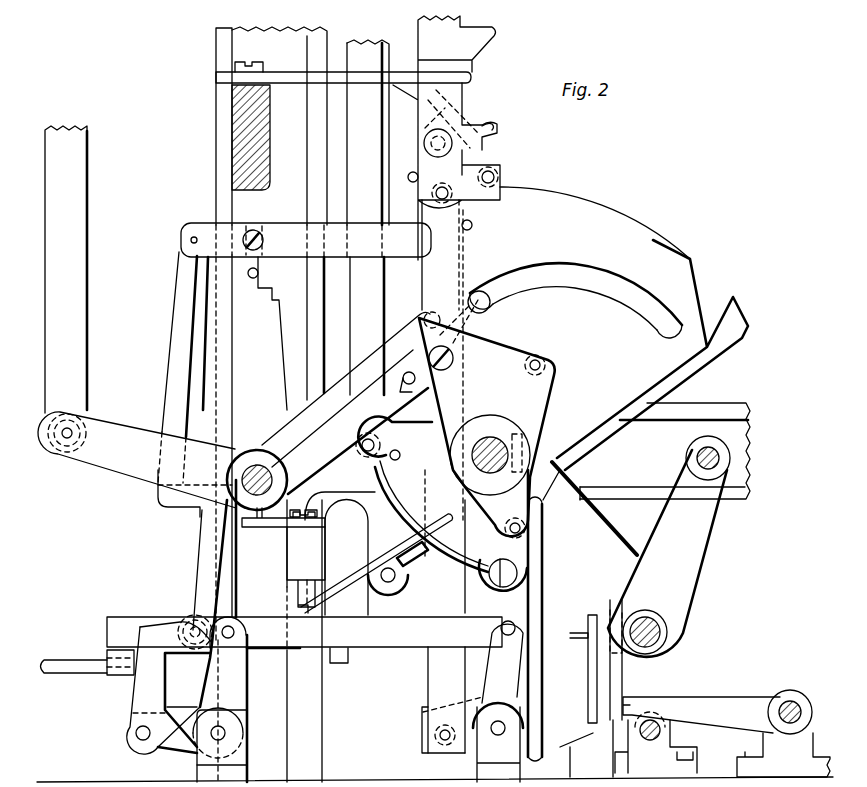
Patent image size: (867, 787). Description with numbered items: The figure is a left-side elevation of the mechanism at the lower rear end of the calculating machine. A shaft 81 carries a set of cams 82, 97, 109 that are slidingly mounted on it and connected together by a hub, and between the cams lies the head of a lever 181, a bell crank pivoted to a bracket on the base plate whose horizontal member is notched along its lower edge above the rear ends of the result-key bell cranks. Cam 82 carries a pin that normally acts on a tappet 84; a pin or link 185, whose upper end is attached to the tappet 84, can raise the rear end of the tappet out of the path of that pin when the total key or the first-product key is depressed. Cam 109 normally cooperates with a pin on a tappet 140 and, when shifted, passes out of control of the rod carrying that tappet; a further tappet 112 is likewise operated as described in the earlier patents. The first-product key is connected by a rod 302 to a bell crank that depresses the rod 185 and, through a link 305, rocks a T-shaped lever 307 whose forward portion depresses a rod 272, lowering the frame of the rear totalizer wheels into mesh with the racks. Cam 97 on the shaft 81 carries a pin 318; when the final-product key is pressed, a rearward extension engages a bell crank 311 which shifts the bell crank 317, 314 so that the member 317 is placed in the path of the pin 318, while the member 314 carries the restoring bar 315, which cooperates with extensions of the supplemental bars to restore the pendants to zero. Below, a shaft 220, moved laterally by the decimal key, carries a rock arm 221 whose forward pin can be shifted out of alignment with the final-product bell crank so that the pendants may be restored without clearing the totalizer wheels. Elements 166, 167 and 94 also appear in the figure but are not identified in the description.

The bar 166 is at (78, 279).
The link 185 is at (174, 363).
The arm 167 is at (95, 457).
The tappet 84 is at (306, 316).
The link 94 is at (347, 398).
The tappet 112 is at (443, 288).
The tappet 140 is at (483, 141).
The cam 82 is at (579, 262).
The cam 109 is at (715, 310).
The cam 97 is at (487, 419).
The shaft 81 is at (528, 443).
The restoring bar 315 is at (698, 460).
The pin 318 is at (524, 523).
The bell crank member 317 is at (590, 519).
The bell crank member 314 is at (667, 625).
The rod 302 is at (77, 653).
The link 305 is at (304, 632).
The lever 181 is at (542, 632).
The rod 272 is at (435, 695).
The T-shaped lever 307 is at (498, 701).
The bell crank 311 is at (622, 680).
The rock arm 221 is at (697, 735).
The shaft 220 is at (792, 700).